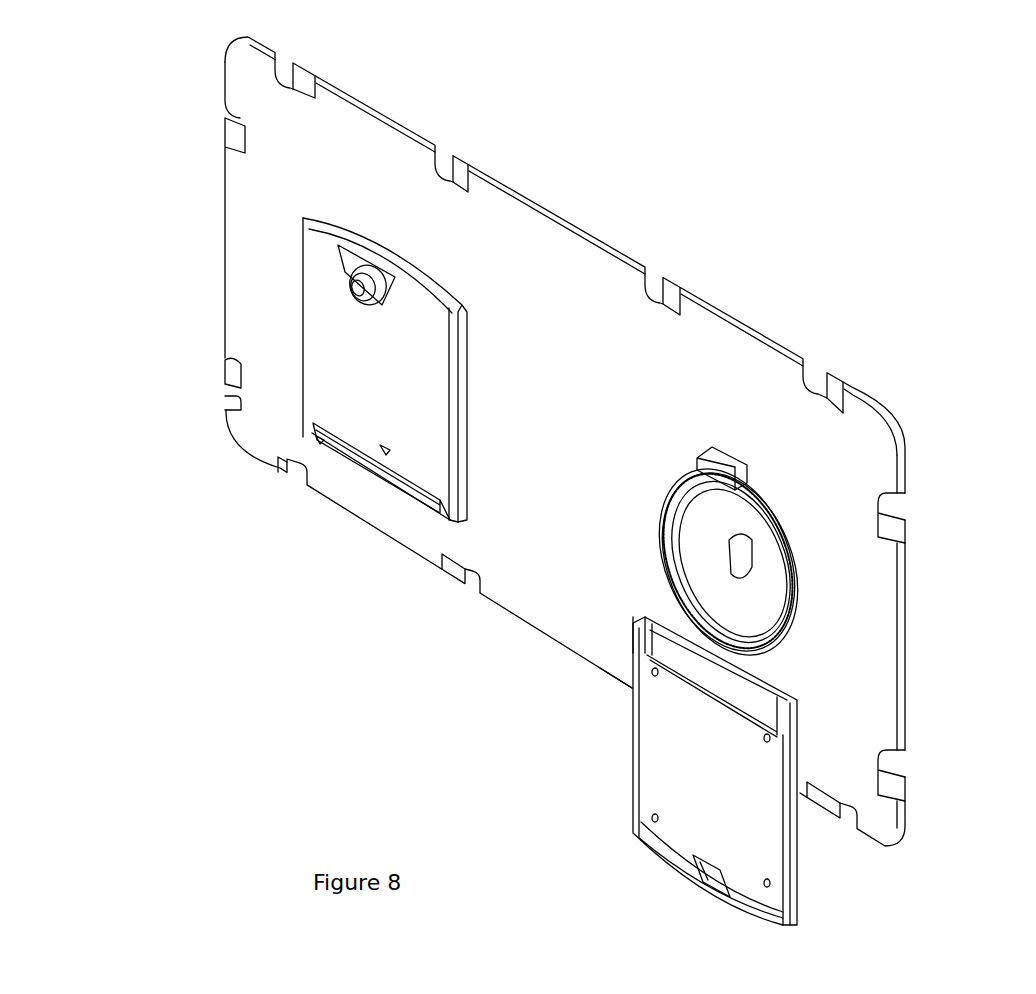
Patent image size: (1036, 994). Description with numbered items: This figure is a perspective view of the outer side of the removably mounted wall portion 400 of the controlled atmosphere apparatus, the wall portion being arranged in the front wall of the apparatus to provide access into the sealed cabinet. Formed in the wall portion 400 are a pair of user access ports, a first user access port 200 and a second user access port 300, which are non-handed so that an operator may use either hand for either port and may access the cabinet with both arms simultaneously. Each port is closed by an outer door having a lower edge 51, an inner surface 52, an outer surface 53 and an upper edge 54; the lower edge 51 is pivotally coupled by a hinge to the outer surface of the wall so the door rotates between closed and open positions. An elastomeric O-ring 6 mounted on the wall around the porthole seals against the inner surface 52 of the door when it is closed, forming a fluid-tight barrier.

The removably mounted wall portion 400 is at (683, 345).
The outer surface 53 is at (325, 353).
The upper edge 54 is at (386, 261).
The lower edge 51 is at (318, 437).
The second user access port 300 is at (383, 448).
The elastomeric O-ring 6 is at (799, 587).
The inner surface 52 is at (660, 757).
The first user access port 200 is at (612, 605).